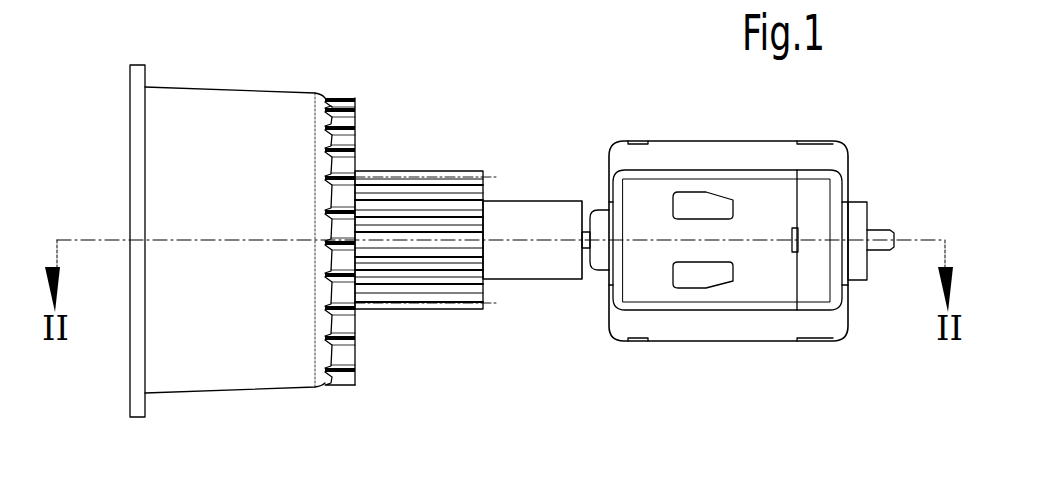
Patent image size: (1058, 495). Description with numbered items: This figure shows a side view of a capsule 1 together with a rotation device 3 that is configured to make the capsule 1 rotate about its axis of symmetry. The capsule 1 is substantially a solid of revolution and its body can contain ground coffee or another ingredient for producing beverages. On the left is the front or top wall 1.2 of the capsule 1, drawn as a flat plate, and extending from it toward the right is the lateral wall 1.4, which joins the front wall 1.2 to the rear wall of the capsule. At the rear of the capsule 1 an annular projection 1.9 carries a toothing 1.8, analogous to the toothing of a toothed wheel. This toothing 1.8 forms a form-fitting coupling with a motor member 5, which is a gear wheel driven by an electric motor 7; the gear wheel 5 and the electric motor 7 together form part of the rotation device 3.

The capsule 1 is at (187, 402).
The front or top wall 1.2 is at (128, 180).
The lateral wall 1.4 is at (228, 130).
The toothing 1.8 is at (378, 209).
The annular projection 1.9 is at (356, 148).
The rotation device 3 is at (545, 96).
The motor member 5 is at (415, 288).
The electric motor 7 is at (752, 325).